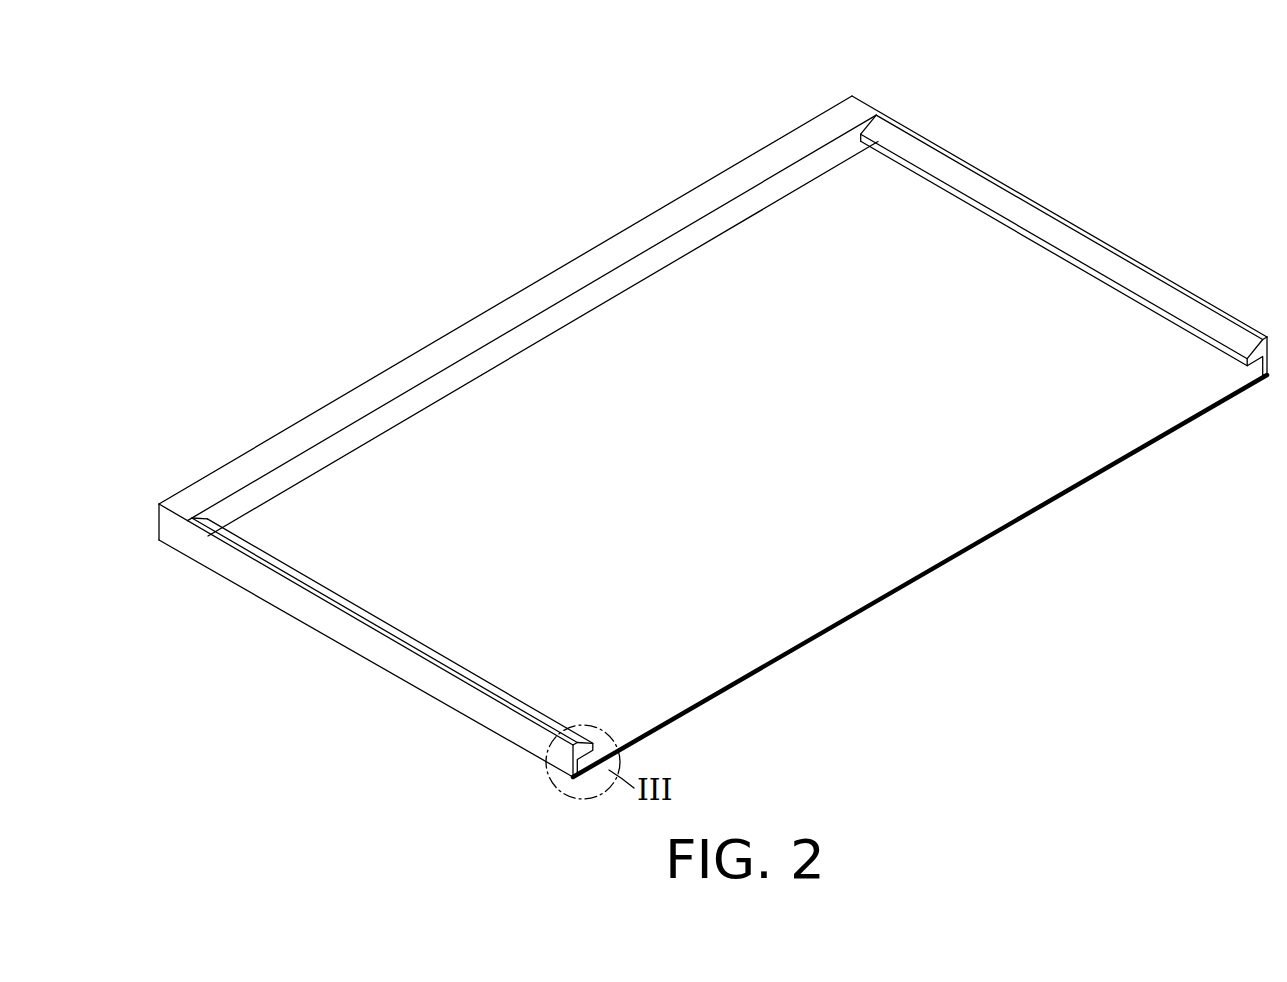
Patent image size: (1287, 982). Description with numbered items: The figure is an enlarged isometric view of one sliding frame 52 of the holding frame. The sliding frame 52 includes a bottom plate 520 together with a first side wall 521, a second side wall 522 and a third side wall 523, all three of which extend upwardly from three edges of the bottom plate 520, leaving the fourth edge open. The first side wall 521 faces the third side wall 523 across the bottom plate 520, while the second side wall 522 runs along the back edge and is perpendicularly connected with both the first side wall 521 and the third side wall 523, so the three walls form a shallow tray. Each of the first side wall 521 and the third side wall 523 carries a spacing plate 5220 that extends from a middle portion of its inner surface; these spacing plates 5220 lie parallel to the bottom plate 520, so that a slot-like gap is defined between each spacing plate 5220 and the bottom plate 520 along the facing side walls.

The sliding frame 52 is at (515, 229).
The bottom plate 520 is at (968, 230).
The first side wall 521 is at (455, 695).
The second side wall 522 is at (440, 355).
The third side wall 523 is at (1075, 232).
The spacing plate 5220 is at (920, 158).